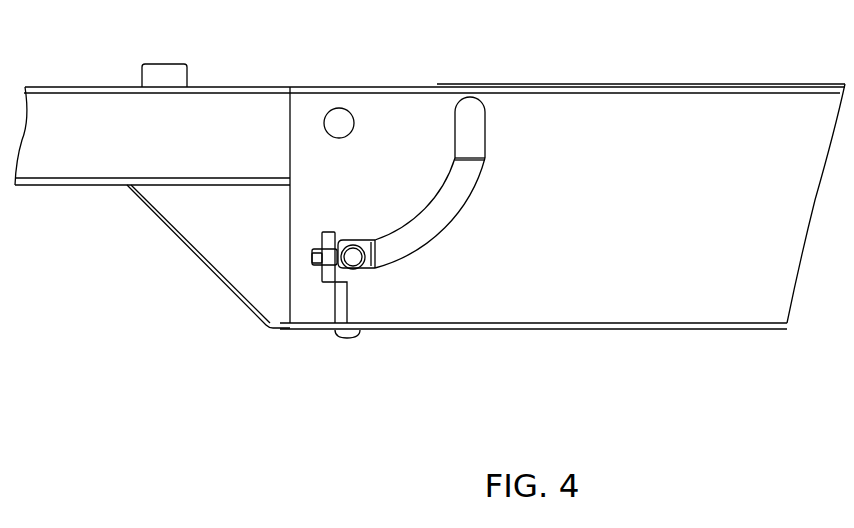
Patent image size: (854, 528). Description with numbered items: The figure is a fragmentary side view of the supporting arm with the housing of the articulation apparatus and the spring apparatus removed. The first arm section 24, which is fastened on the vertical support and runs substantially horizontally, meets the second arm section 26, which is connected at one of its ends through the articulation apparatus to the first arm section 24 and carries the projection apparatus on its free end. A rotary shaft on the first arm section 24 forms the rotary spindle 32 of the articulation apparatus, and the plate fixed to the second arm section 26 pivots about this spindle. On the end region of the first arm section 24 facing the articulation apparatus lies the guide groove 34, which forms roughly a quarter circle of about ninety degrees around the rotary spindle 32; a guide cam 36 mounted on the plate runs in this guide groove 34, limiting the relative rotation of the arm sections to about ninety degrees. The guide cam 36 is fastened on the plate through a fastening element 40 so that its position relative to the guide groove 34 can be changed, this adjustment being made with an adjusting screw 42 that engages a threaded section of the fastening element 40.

The first arm section 24 is at (638, 90).
The second arm section 26 is at (233, 108).
The rotary spindle 32 is at (339, 123).
The guide groove 34 is at (463, 183).
The guide cam 36 is at (353, 257).
The fastening element 40 is at (327, 258).
The adjusting screw 42 is at (340, 312).